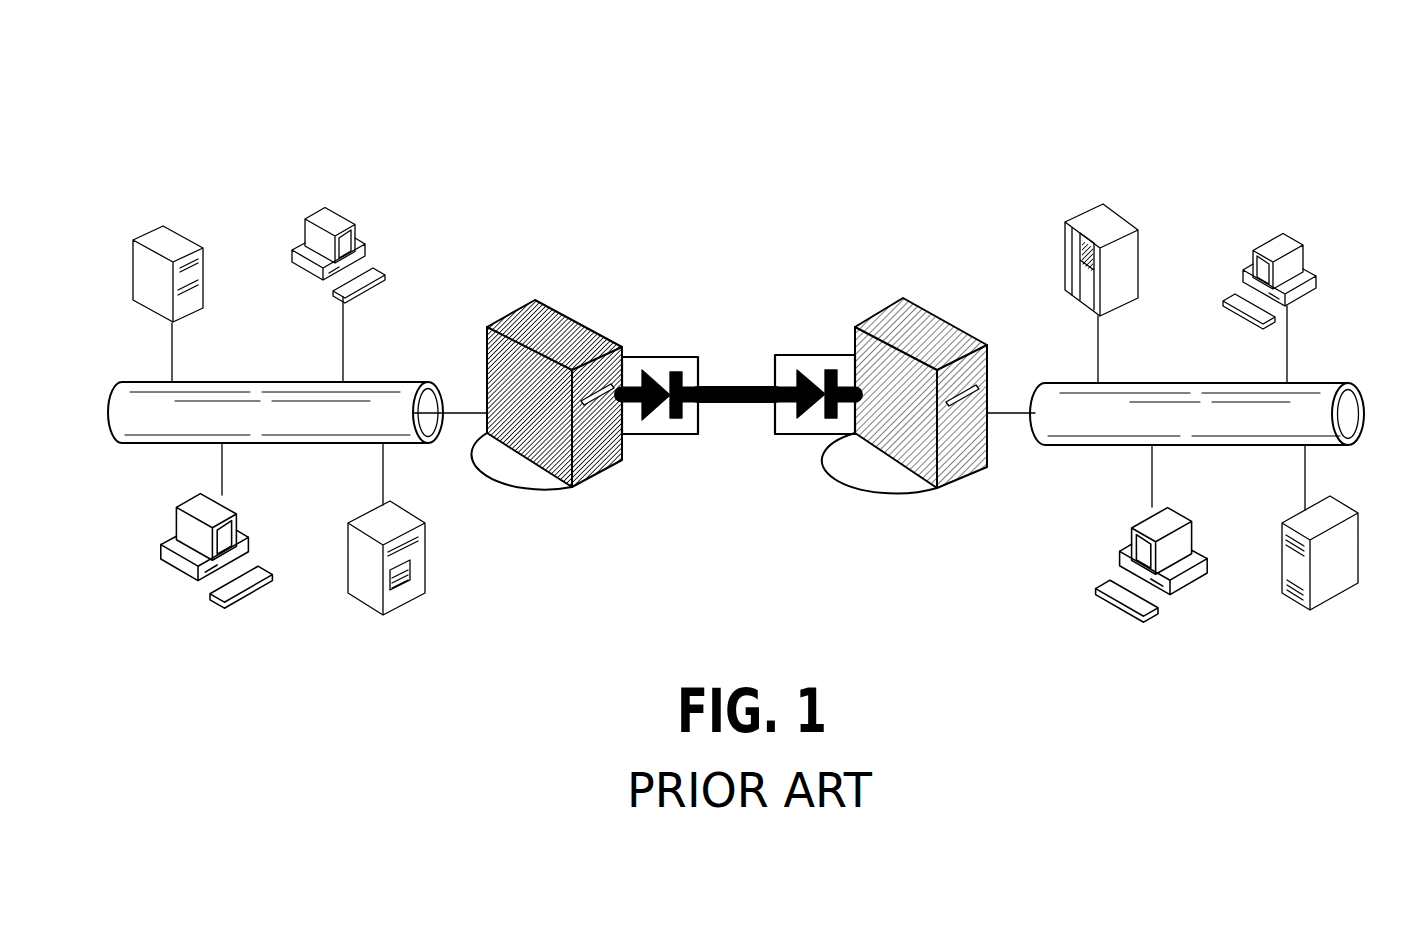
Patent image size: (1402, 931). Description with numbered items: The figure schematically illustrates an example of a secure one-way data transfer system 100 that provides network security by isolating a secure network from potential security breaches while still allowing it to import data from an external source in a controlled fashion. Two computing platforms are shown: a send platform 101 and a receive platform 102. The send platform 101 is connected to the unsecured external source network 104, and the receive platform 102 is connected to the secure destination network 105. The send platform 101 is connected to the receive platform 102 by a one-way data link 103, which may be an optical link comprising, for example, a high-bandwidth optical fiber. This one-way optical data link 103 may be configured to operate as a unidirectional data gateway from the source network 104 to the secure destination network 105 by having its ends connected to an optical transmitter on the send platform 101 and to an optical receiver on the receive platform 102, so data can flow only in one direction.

The one-way data transfer system 100 is at (755, 133).
The send platform 101 is at (553, 300).
The receive platform 102 is at (902, 312).
The one-way data link 103 is at (740, 404).
The source network 104 is at (253, 410).
The destination network 105 is at (1160, 407).